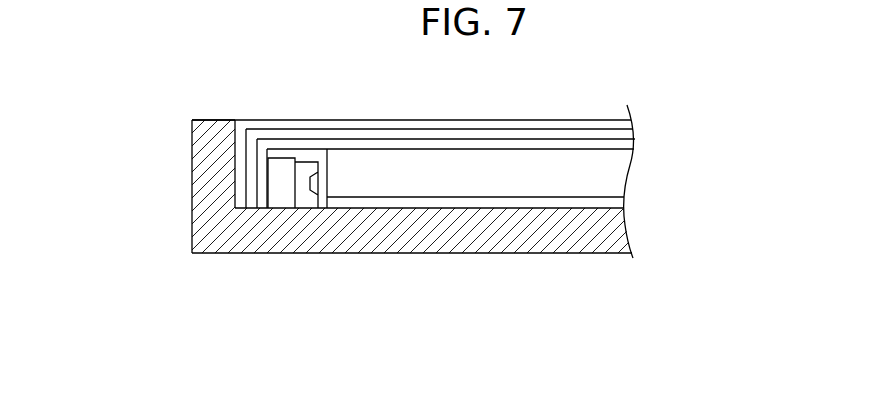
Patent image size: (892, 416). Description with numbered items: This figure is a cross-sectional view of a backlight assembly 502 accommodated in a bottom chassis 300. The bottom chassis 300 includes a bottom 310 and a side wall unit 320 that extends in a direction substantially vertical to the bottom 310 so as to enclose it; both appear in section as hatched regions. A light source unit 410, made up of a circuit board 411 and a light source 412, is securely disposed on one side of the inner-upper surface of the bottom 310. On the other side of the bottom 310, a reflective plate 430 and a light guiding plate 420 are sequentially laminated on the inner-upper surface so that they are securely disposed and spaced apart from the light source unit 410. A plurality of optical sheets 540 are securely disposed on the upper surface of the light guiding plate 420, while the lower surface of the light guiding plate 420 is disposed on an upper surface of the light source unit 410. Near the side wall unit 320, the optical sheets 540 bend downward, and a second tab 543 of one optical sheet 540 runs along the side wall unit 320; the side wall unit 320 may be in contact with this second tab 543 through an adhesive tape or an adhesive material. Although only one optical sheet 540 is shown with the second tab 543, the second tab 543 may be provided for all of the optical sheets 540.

The bottom chassis 300 is at (346, 194).
The bottom 310 is at (252, 240).
The side wall unit 320 is at (207, 180).
The light source unit 410 is at (307, 257).
The circuit board 411 is at (283, 197).
The light source 412 is at (305, 198).
The light guiding plate 420 is at (618, 180).
The reflective plate 430 is at (620, 203).
The backlight assembly 502 is at (443, 176).
The optical sheets 540 is at (414, 166).
The second tab 543 is at (240, 153).